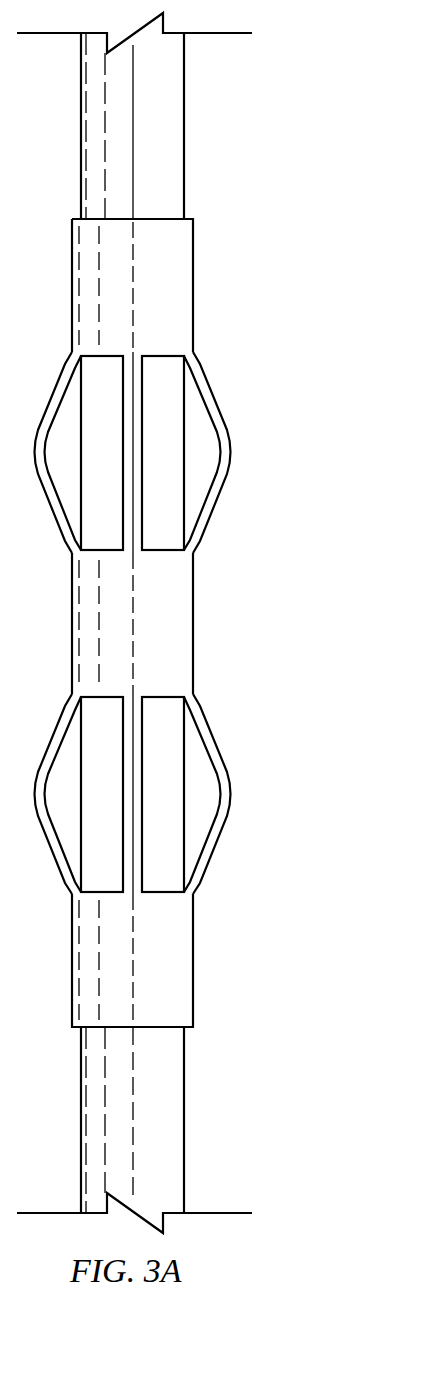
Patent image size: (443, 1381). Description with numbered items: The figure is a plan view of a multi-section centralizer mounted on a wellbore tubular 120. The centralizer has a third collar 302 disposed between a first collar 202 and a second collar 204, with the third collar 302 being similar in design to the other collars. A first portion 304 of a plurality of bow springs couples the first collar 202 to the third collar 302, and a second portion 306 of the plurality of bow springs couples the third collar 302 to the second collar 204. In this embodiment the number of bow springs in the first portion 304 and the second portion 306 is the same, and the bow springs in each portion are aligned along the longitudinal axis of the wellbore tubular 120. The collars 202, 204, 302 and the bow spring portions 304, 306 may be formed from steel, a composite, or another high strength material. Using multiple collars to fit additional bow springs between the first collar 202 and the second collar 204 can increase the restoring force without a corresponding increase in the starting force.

The wellbore tubular 120 is at (184, 126).
The second collar 204 is at (193, 268).
The first collar 202 is at (193, 966).
The third collar 302 is at (193, 627).
The second portion of the plurality of bow springs 306 is at (222, 402).
The first portion of the plurality of bow springs 304 is at (222, 744).